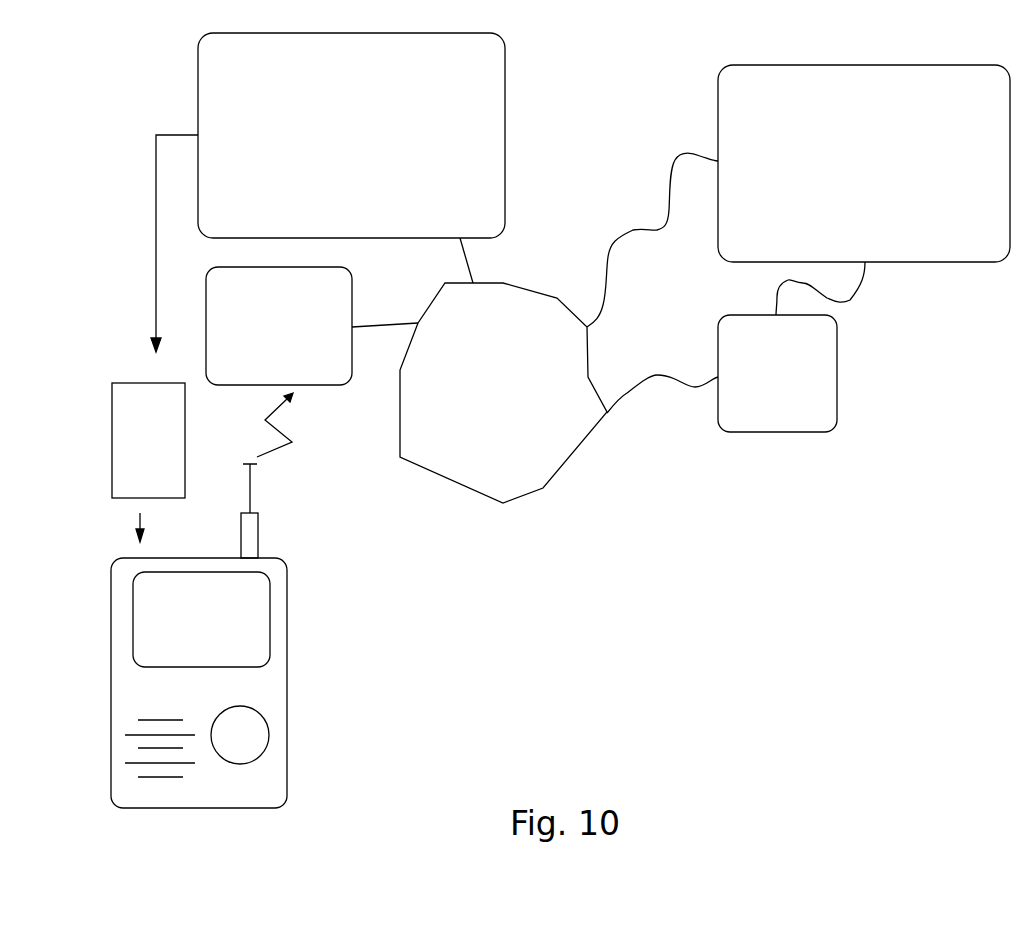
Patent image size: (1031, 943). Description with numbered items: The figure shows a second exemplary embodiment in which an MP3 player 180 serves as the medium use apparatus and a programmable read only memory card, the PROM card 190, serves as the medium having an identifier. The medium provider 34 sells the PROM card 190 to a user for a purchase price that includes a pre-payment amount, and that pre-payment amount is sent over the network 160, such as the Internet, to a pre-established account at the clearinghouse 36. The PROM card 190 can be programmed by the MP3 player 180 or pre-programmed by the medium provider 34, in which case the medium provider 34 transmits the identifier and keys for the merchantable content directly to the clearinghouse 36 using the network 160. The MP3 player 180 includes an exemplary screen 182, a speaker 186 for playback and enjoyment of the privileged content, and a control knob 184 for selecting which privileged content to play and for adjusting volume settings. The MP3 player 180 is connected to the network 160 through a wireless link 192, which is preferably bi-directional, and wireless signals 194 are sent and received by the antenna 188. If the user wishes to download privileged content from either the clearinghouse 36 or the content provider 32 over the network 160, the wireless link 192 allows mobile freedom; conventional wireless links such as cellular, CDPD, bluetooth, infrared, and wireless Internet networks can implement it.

The medium provider 34 is at (213, 92).
The clearinghouse 36 is at (735, 108).
The content provider 32 is at (837, 372).
The network 160 is at (503, 283).
The wireless link 192 is at (343, 297).
The wireless signals 194 is at (300, 442).
The antenna 188 is at (258, 530).
The PROM card 190 is at (112, 442).
The MP3 player 180 is at (287, 683).
The screen 182 is at (132, 620).
The speaker 186 is at (127, 748).
The control knob 184 is at (270, 735).